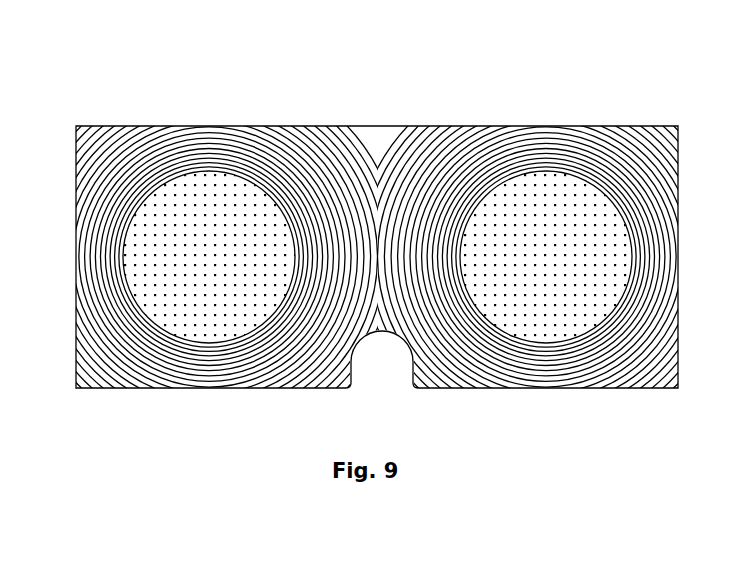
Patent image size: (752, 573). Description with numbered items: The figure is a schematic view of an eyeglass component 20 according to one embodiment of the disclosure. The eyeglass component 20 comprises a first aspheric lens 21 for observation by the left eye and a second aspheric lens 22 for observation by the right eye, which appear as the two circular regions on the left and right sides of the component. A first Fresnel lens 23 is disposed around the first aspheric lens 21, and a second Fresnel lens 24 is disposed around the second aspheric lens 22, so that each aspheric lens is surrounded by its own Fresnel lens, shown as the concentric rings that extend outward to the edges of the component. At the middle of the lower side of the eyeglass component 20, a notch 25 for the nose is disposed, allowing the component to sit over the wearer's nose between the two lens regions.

The eyeglass component 20 is at (119, 31).
The first aspheric lens 21 is at (202, 248).
The second aspheric lens 22 is at (548, 245).
The first Fresnel lens 23 is at (158, 152).
The second Fresnel lens 24 is at (485, 157).
The notch 25 is at (368, 335).